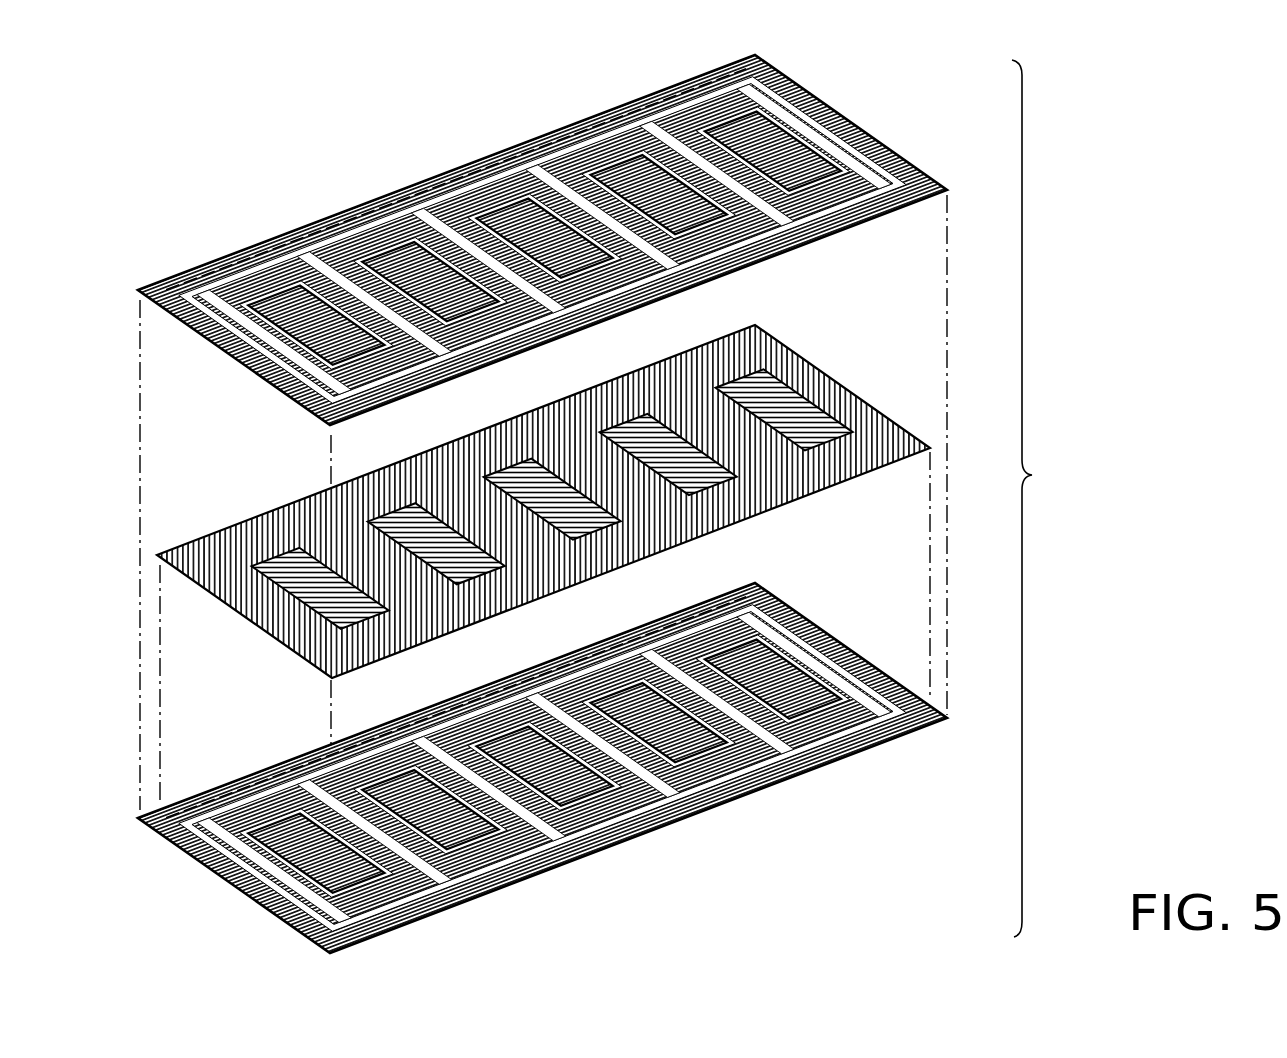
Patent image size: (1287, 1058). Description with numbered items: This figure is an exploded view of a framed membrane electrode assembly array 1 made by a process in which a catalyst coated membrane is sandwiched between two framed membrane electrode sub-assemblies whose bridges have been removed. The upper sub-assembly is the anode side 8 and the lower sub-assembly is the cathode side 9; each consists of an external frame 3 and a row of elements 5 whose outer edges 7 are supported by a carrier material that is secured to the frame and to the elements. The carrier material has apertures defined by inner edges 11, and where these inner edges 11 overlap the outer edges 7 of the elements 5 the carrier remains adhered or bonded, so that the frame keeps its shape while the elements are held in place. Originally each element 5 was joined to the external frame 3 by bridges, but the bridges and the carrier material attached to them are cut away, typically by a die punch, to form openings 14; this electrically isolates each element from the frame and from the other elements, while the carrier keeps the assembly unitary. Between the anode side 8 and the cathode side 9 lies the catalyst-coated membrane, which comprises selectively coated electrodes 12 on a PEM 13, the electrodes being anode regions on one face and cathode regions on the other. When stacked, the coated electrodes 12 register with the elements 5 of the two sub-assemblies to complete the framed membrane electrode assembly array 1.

The framed membrane electrode assembly array 1 is at (596, 502).
The external frame 3 is at (847, 112).
The element 5 is at (407, 253).
The outer edges 7 is at (327, 280).
The anode side 8 is at (245, 230).
The cathode side 9 is at (690, 836).
The inner edges 11 is at (606, 109).
The selectively coated electrodes 12 is at (232, 547).
The PEM 13 is at (297, 567).
The openings 14 is at (523, 180).